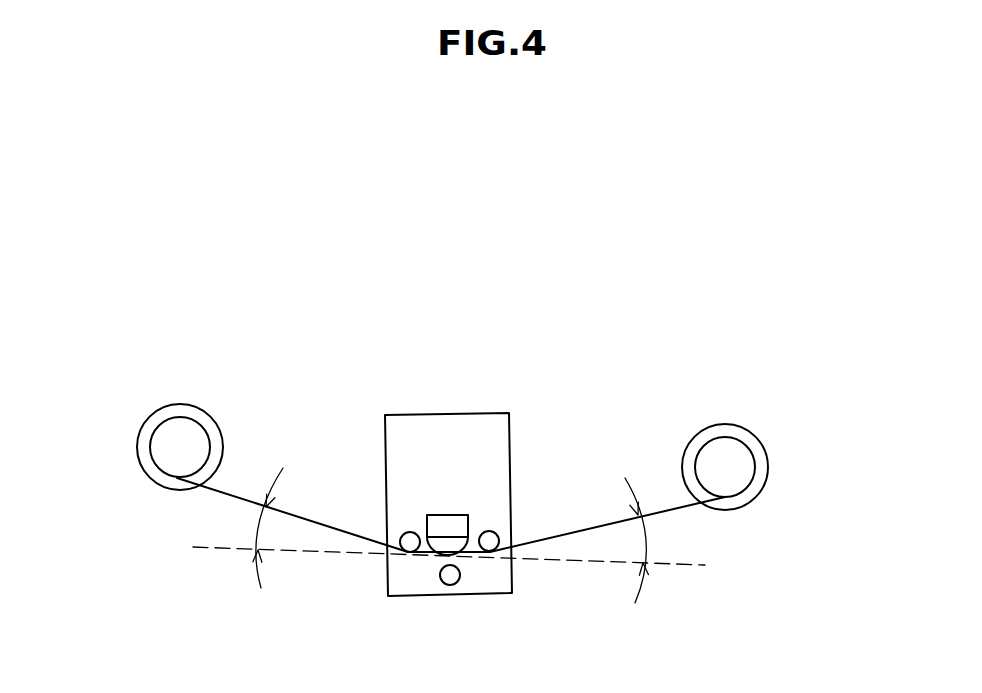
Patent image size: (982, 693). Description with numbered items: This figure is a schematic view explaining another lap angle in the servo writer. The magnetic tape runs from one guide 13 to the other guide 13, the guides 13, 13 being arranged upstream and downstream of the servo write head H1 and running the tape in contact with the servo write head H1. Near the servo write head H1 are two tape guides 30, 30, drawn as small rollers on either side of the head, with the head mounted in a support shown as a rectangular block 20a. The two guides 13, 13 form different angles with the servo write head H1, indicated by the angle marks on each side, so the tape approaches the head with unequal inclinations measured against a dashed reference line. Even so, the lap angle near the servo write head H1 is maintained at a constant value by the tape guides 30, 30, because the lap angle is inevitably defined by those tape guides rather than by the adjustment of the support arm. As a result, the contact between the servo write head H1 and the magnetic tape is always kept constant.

The guide 13 is at (150, 398).
The head unit 20a is at (513, 592).
The servo write head H1 is at (452, 514).
The tape guide 30 is at (403, 534).